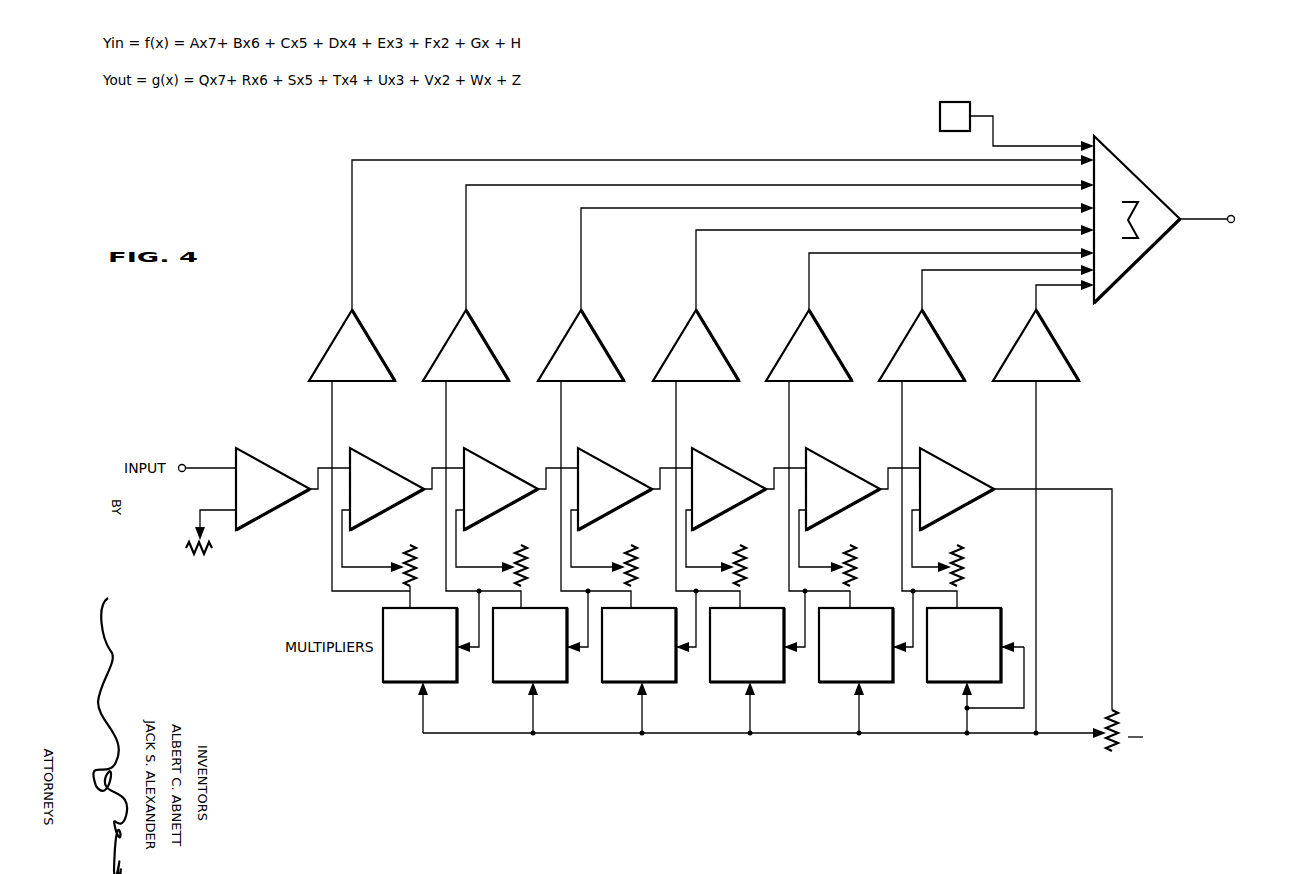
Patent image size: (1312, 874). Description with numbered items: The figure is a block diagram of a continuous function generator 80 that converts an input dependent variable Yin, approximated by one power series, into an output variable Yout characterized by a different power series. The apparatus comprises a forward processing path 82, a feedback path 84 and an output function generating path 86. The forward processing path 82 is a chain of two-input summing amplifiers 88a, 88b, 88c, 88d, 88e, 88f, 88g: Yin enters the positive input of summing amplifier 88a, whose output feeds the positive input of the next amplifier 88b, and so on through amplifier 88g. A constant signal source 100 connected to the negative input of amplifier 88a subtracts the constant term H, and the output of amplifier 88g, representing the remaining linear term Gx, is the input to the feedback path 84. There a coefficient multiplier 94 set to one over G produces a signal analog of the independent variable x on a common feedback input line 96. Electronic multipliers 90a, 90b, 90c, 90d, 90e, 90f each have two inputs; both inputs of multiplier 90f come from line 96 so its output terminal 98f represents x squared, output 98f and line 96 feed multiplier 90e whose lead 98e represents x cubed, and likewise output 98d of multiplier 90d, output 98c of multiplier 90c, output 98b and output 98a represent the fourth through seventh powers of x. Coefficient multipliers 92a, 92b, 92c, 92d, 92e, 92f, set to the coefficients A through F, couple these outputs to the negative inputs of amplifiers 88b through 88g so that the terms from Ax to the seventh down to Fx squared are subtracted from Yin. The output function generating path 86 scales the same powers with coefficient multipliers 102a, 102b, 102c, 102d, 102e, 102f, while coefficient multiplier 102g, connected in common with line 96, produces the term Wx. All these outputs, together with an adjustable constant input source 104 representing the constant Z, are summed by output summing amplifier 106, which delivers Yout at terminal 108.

The function generator 80 is at (688, 771).
The forward processing path 82 is at (721, 419).
The feedback path 84 is at (686, 714).
The output function generating path 86 is at (641, 269).
The summing amplifier 88a is at (276, 470).
The summing amplifier 88b is at (390, 470).
The summing amplifier 88c is at (504, 470).
The summing amplifier 88d is at (618, 470).
The summing amplifier 88e is at (732, 470).
The summing amplifier 88f is at (846, 470).
The summing amplifier 88g is at (960, 470).
The electronic multiplier 90a is at (395, 683).
The electronic multiplier 90b is at (511, 682).
The electronic multiplier 90c is at (615, 682).
The electronic multiplier 90d is at (735, 682).
The electronic multiplier 90e is at (837, 682).
The electronic multiplier 90f is at (937, 682).
The coefficient multiplier 92a is at (404, 550).
The coefficient multiplier 92b is at (515, 550).
The coefficient multiplier 92c is at (625, 550).
The coefficient multiplier 92d is at (734, 550).
The coefficient multiplier 92e is at (844, 550).
The coefficient multiplier 92f is at (951, 550).
The coefficient multiplier 94 is at (1113, 712).
The common feedback input line 96 is at (913, 735).
The multiplier output 98a is at (414, 608).
The multiplier output 98b is at (525, 608).
The multiplier output 98c is at (635, 608).
The multiplier output 98d is at (744, 608).
The multiplier output lead 98e is at (853, 608).
The multiplier output terminal 98f is at (961, 608).
The constant signal source 100 is at (213, 548).
The coefficient multiplier 102a is at (371, 342).
The coefficient multiplier 102b is at (485, 342).
The coefficient multiplier 102c is at (600, 342).
The coefficient multiplier 102d is at (715, 342).
The coefficient multiplier 102e is at (828, 342).
The coefficient multiplier 102f is at (941, 342).
The coefficient multiplier 102g is at (1057, 352).
The adjustable constant input source 104 is at (952, 101).
The output summing amplifier 106 is at (1139, 182).
The output terminal 108 is at (1205, 220).